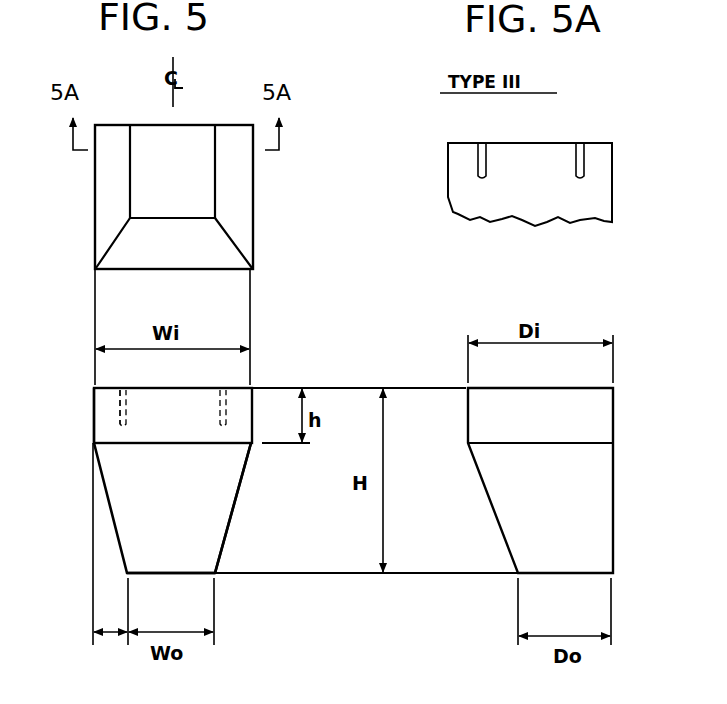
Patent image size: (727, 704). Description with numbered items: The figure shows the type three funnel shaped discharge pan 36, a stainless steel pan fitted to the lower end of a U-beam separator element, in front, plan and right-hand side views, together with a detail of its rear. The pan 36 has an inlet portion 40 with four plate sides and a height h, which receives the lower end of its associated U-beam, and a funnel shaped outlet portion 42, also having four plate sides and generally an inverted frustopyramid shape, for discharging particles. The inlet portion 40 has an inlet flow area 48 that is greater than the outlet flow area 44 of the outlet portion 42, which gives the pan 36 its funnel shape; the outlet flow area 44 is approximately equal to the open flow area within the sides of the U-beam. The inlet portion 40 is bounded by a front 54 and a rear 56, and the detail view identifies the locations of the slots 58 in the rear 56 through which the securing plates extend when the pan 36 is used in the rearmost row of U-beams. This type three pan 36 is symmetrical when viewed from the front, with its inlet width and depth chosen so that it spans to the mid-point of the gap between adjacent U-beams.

In FIG. 5, the funnel shaped discharge pan 36 is at (186, 509).
In FIG. 5, the inlet portion 40 is at (100, 414).
In FIG. 5, the outlet portion 42 is at (213, 543).
In FIG. 5, the outlet flow area 44 is at (146, 583).
In FIG. 5, the inlet flow area 48 is at (141, 383).
In FIG. 5, the front 54 is at (147, 271).
In FIG. 5, the rear 56 is at (158, 125).
In FIG. 5A, the rear 56 is at (540, 181).
In FIG. 5A, the slots 58 is at (482, 146).